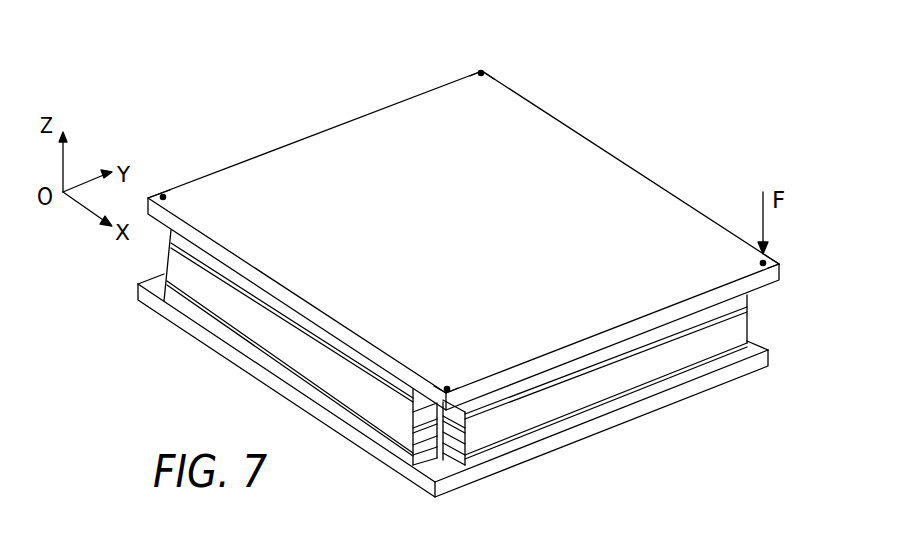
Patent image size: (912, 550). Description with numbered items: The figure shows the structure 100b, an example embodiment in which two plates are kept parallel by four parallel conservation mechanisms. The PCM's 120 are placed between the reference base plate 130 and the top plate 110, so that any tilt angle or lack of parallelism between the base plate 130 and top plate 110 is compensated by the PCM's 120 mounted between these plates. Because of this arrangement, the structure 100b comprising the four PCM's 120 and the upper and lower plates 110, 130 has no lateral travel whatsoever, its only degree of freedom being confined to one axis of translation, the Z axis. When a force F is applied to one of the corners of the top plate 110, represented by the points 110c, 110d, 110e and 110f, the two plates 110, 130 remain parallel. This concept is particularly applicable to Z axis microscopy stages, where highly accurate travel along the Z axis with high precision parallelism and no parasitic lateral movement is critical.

The structure 100b is at (268, 96).
The top plate 110 is at (528, 152).
The corner point 110c is at (765, 260).
The corner point 110d is at (482, 70).
The corner point 110e is at (163, 194).
The corner point 110f is at (448, 386).
The parallel conservation mechanism 120 is at (277, 334).
The base plate 130 is at (470, 477).